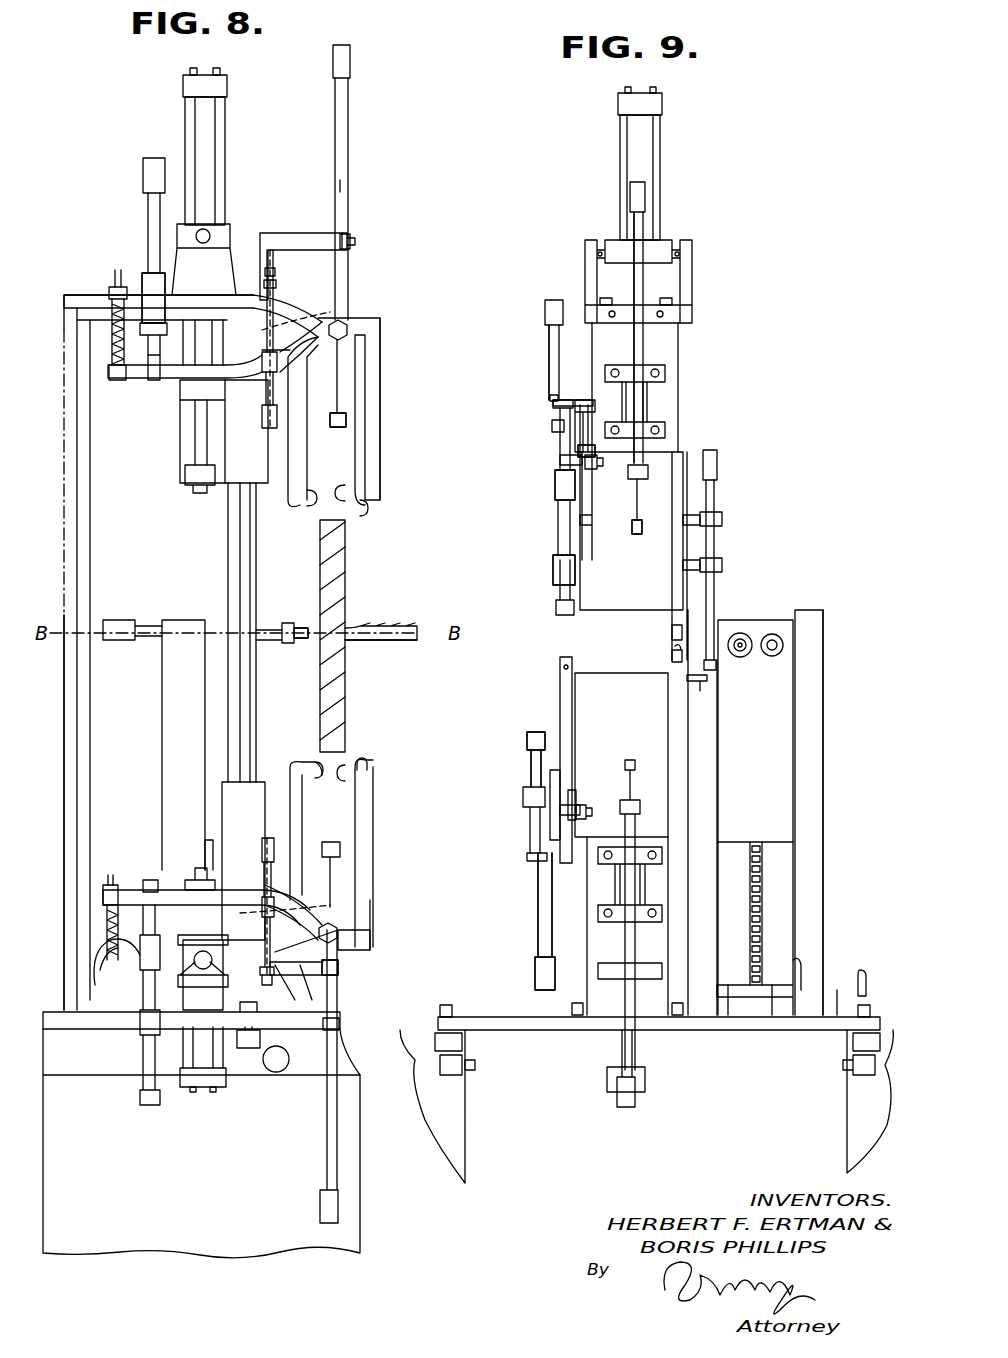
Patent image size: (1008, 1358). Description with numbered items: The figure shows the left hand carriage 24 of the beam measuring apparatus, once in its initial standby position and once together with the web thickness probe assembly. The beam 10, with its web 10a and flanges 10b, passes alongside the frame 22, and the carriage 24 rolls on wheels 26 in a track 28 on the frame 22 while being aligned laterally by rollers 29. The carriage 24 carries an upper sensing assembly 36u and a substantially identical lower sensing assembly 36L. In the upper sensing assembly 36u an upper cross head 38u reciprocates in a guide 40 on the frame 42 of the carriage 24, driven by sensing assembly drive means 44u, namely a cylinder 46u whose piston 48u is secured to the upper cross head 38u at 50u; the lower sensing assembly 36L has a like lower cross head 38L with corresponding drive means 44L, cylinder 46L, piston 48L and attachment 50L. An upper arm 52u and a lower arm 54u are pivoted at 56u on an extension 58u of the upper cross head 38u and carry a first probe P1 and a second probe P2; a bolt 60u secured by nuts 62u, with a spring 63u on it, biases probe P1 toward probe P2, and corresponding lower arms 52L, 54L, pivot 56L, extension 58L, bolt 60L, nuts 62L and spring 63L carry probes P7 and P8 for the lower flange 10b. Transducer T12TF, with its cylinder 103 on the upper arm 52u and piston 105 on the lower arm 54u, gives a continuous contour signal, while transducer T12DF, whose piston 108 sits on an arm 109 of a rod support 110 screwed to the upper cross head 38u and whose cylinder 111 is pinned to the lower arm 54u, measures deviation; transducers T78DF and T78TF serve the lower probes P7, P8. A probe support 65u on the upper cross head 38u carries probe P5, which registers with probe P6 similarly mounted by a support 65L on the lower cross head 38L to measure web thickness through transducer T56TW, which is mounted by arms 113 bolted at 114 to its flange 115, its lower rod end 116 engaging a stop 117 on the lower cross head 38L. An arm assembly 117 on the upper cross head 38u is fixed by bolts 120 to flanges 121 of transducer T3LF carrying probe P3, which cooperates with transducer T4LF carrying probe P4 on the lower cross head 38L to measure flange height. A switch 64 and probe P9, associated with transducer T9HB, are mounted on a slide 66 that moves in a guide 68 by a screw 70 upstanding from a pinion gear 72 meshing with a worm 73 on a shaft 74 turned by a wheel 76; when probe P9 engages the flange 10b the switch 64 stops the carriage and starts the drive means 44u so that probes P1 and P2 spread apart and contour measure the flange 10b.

In FIG. 8, the beam 10 is at (407, 652).
In FIG. 8, the web 10a is at (385, 625).
In FIG. 8, the flanges 10b is at (345, 565).
In FIG. 8, the frame 22 is at (165, 1250).
In FIG. 9, the frame 22 is at (462, 1140).
In FIG. 8, the carriage 24 is at (60, 731).
In FIG. 9, the carriage 24 is at (830, 740).
In FIG. 8, the wheels 26 is at (277, 1073).
In FIG. 9, the wheels 26 is at (455, 1078).
In FIG. 8, the track 28 is at (88, 1075).
In FIG. 9, the track 28 is at (448, 1078).
In FIG. 8, the rollers 29 is at (238, 1045).
In FIG. 9, the rollers 29 is at (440, 1042).
In FIG. 8, the upper sensing assembly 36u is at (392, 354).
In FIG. 9, the upper sensing assembly 36u is at (534, 371).
In FIG. 8, the lower sensing assembly 36L is at (374, 969).
In FIG. 9, the lower sensing assembly 36L is at (521, 832).
In FIG. 8, the upper cross head 38u is at (236, 420).
In FIG. 9, the upper cross head 38u is at (632, 598).
In FIG. 8, the lower cross head 38L is at (253, 790).
In FIG. 9, the lower cross head 38L is at (640, 726).
In FIG. 8, the guide 40 is at (227, 547).
In FIG. 9, the guide 40 is at (679, 348).
In FIG. 8, the frame 42 is at (91, 549).
In FIG. 9, the frame 42 is at (694, 318).
In FIG. 8, the sensing assembly drive means 44u is at (226, 156).
In FIG. 9, the sensing assembly drive means 44u is at (667, 131).
In FIG. 8, the lower cylinder 44L is at (215, 1085).
In FIG. 8, the cylinder 46u is at (210, 192).
In FIG. 9, the cylinder 46u is at (645, 170).
In FIG. 8, the lower piston rod 46L is at (185, 1062).
In FIG. 8, the piston 48u is at (200, 458).
In FIG. 8, the lower shaft 48L is at (185, 878).
In FIG. 8, the attachment point 50u is at (197, 493).
In FIG. 8, the lower bracket 50L is at (195, 870).
In FIG. 8, the upper arm 52u is at (195, 294).
In FIG. 9, the upper arm 52u is at (583, 410).
In FIG. 8, the lower fork plate 52L is at (374, 796).
In FIG. 9, the lower fork plate 52L is at (559, 690).
In FIG. 8, the lower arm 54u is at (170, 378).
In FIG. 9, the lower arm 54u is at (548, 560).
In FIG. 8, the lower bar 54L is at (302, 890).
In FIG. 8, the pivot 56u is at (347, 322).
In FIG. 9, the pivot 56u is at (602, 470).
In FIG. 8, the lower pivot 56L is at (340, 928).
In FIG. 9, the lower pivot 56L is at (585, 815).
In FIG. 8, the extension 58u is at (330, 300).
In FIG. 9, the extension 58u is at (580, 460).
In FIG. 8, the lower link 58L is at (330, 905).
In FIG. 9, the lower link 58L is at (568, 805).
In FIG. 8, the bolt 60u is at (150, 382).
In FIG. 8, the lower bolt 60L is at (135, 880).
In FIG. 8, the nuts 62u is at (108, 283).
In FIG. 8, the lower stop block 62L is at (105, 985).
In FIG. 8, the spring 63u is at (112, 340).
In FIG. 8, the lower spring 63L is at (107, 920).
In FIG. 8, the switch 64 is at (297, 642).
In FIG. 9, the switch 64 is at (742, 632).
In FIG. 8, the probe support 65u is at (382, 325).
In FIG. 8, the lower jaw 65L is at (372, 945).
In FIG. 9, the slide 66 is at (768, 772).
In FIG. 8, the guide 68 is at (160, 735).
In FIG. 9, the guide 68 is at (795, 785).
In FIG. 9, the screw 70 is at (763, 918).
In FIG. 9, the pinion gear 72 is at (730, 982).
In FIG. 9, the worm 73 is at (770, 982).
In FIG. 9, the shaft 74 is at (838, 985).
In FIG. 8, the wheel 76 is at (95, 950).
In FIG. 9, the wheel 76 is at (862, 975).
In FIG. 8, the cylinder 103 is at (148, 280).
In FIG. 8, the piston 105 is at (148, 360).
In FIG. 8, the piston 108 is at (276, 270).
In FIG. 9, the piston 108 is at (545, 398).
In FIG. 9, the arm 109 is at (540, 342).
In FIG. 8, the rod support 110 is at (277, 285).
In FIG. 9, the rod support 110 is at (550, 426).
In FIG. 8, the cylinder 111 is at (265, 345).
In FIG. 9, the arms 113 is at (690, 565).
In FIG. 9, the bolt connection 114 is at (722, 565).
In FIG. 9, the flange 115 is at (722, 517).
In FIG. 9, the lower rod end 116 is at (714, 665).
In FIG. 8, the stop 117 is at (310, 235).
In FIG. 9, the stop 117 is at (692, 333).
In FIG. 8, the bolts 120 is at (350, 240).
In FIG. 9, the bolts 120 is at (666, 373).
In FIG. 8, the flanges 121 is at (347, 240).
In FIG. 9, the flanges 121 is at (652, 416).
In FIG. 8, the first probe P1 is at (312, 505).
In FIG. 8, the second probe P2 is at (348, 505).
In FIG. 8, the probe P3 is at (336, 428).
In FIG. 9, the probe P3 is at (632, 530).
In FIG. 8, the probe P4 is at (327, 860).
In FIG. 9, the probe P4 is at (632, 765).
In FIG. 8, the probe P5 is at (370, 510).
In FIG. 9, the probe P5 is at (672, 635).
In FIG. 8, the registering probe P6 is at (367, 765).
In FIG. 9, the registering probe P6 is at (670, 655).
In FIG. 8, the probe P7 is at (322, 786).
In FIG. 8, the probe P8 is at (346, 775).
In FIG. 8, the probe P9 is at (302, 622).
In FIG. 9, the probe P9 is at (774, 633).
In FIG. 8, the transducer T3LF is at (357, 127).
In FIG. 9, the transducer T3LF is at (655, 215).
In FIG. 8, the transducer T4LF is at (313, 1182).
In FIG. 9, the transducer T4LF is at (615, 1117).
In FIG. 8, the transducer T9HB is at (125, 618).
In FIG. 8, the transducer T12TF is at (137, 216).
In FIG. 9, the transducer T12TF is at (562, 293).
In FIG. 8, the transducer T12DF is at (265, 383).
In FIG. 9, the transducer T12DF is at (523, 478).
In FIG. 9, the transducer T56TW is at (716, 600).
In FIG. 8, the transducer T78TF is at (142, 992).
In FIG. 9, the transducer T78TF is at (528, 951).
In FIG. 8, the transducer T78DF is at (307, 955).
In FIG. 9, the transducer T78DF is at (520, 778).